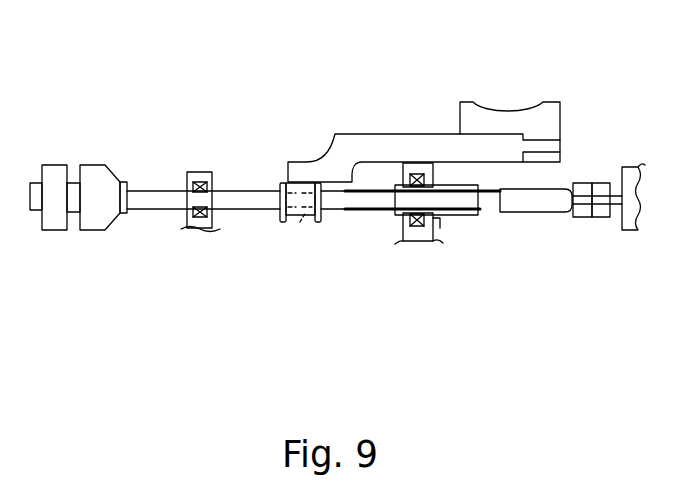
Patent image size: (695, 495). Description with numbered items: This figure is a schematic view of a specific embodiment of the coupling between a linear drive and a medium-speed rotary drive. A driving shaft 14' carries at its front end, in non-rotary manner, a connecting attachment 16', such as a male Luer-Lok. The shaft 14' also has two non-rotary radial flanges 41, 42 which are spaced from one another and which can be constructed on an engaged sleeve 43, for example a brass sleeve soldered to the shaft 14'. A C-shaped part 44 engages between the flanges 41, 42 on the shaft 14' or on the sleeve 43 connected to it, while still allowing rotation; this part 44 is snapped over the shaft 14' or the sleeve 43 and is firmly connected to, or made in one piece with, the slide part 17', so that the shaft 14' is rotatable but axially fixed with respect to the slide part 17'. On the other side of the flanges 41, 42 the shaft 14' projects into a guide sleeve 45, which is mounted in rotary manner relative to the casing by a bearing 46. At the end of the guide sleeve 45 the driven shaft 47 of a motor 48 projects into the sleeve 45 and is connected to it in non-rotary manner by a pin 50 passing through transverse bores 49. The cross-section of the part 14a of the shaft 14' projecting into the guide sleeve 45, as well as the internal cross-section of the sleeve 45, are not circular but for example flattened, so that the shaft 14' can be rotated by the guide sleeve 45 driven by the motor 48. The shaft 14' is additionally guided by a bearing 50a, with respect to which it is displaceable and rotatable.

The connecting attachment 16' is at (72, 251).
The driving shaft 14' is at (312, 264).
The bearing 50a is at (195, 172).
The radial flange 41 is at (283, 182).
The radial flange 42 is at (322, 225).
The sleeve 43 is at (278, 230).
The C-shaped part 44 is at (300, 222).
The slide part 17' is at (424, 101).
The part of shaft projecting into the guide sleeve 14a is at (413, 242).
The bearing 46 is at (433, 228).
The guide sleeve 45 is at (530, 215).
The driven shaft 47 is at (575, 182).
The transverse bores 49 is at (583, 215).
The pin 50 is at (591, 183).
The motor 48 is at (628, 230).